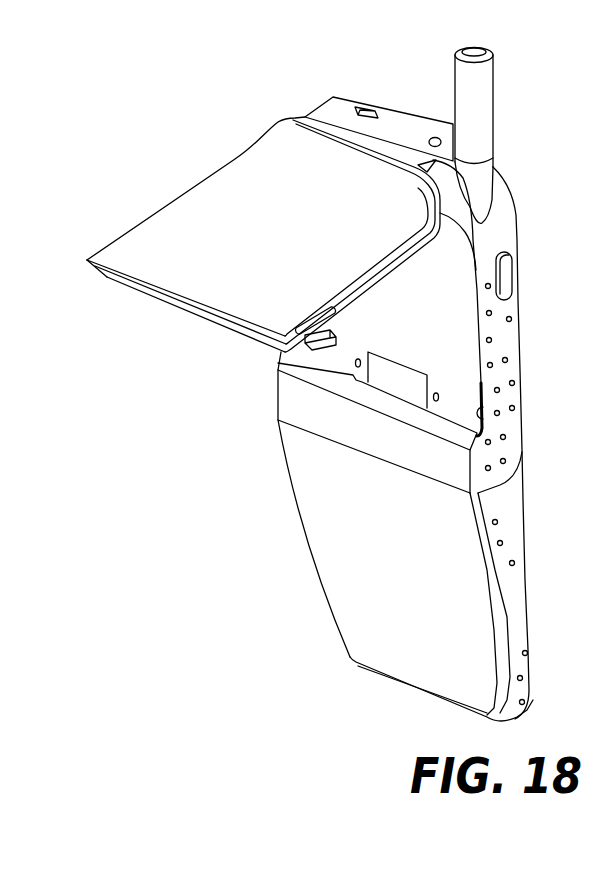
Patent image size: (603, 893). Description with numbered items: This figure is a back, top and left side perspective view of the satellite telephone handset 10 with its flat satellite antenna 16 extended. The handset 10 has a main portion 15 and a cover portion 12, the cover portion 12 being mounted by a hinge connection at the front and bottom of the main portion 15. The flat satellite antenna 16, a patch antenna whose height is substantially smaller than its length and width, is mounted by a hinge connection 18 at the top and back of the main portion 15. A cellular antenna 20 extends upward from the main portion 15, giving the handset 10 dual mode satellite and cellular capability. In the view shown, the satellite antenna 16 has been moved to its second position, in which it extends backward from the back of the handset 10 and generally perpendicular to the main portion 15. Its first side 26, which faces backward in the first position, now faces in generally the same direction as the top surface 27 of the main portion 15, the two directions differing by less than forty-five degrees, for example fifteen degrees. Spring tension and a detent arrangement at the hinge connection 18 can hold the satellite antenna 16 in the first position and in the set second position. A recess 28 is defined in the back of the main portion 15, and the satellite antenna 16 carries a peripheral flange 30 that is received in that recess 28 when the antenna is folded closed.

The satellite telephone handset 10 is at (258, 409).
The cover portion 12 is at (325, 547).
The main portion 15 is at (502, 322).
The flat satellite antenna 16 is at (178, 204).
The hinge connection 18 is at (322, 118).
The cellular antenna 20 is at (486, 76).
The first side 26 is at (217, 183).
The top surface 27 is at (400, 110).
The recess 28 is at (465, 382).
The peripheral flange 30 is at (170, 307).